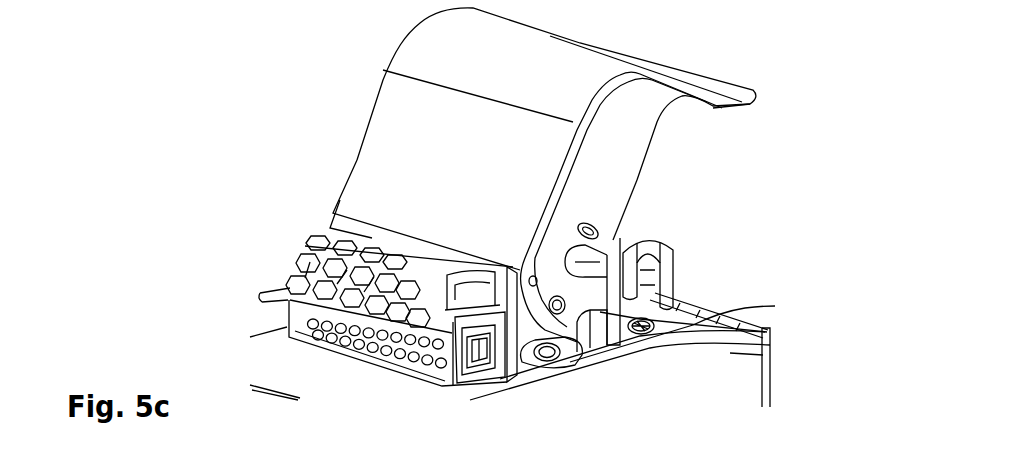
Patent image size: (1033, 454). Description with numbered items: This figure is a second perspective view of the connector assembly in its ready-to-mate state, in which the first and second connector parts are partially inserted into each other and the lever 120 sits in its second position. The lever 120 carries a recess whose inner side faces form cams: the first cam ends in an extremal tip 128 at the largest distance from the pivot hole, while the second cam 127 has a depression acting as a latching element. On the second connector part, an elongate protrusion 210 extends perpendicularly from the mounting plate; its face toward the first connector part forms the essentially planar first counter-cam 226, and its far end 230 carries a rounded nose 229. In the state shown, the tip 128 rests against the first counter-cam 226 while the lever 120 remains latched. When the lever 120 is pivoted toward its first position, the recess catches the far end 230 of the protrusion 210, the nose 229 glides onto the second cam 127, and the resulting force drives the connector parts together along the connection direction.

The lever 120 is at (413, 117).
The second cam 127 is at (605, 231).
The far end 230 is at (637, 252).
The rounded nose 229 is at (633, 290).
The elongate protrusion 210 is at (775, 306).
The first counter-cam 226 is at (763, 355).
The extremal tip 128 is at (587, 378).